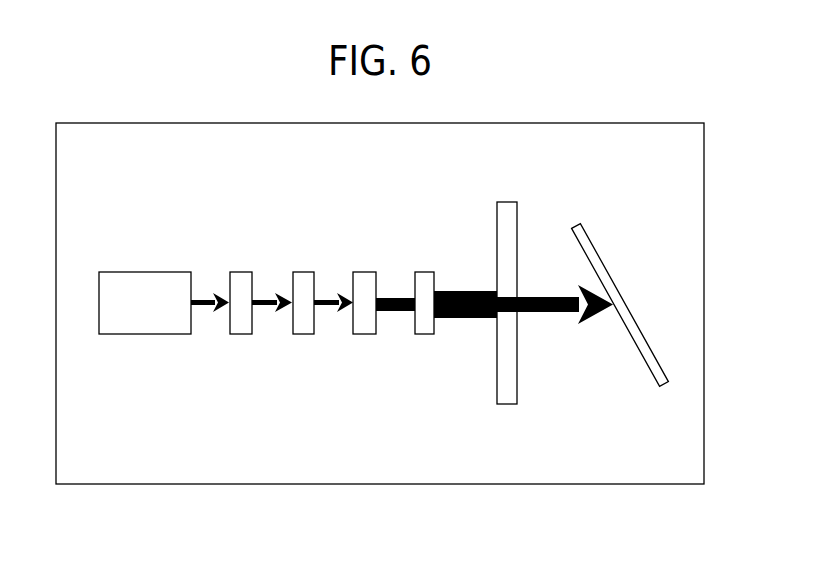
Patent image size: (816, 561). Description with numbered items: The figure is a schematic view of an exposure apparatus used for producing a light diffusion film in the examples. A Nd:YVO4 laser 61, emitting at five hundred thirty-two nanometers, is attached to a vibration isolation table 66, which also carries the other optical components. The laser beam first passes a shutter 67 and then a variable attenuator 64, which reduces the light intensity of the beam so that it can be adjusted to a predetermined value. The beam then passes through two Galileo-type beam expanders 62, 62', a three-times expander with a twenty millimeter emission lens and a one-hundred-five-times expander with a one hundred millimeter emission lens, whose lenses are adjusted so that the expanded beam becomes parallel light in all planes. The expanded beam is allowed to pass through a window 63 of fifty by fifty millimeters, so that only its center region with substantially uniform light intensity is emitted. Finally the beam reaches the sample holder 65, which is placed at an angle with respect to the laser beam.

The Nd:YVO4 laser 61 is at (140, 287).
The shutter 67 is at (240, 285).
The variable attenuator 64 is at (302, 285).
The Galileo-type beam expander 62 is at (367, 272).
The Galileo-type beam expander 62' is at (431, 272).
The window 63 is at (507, 217).
The sample holder 65 is at (585, 240).
The vibration isolation table 66 is at (133, 472).